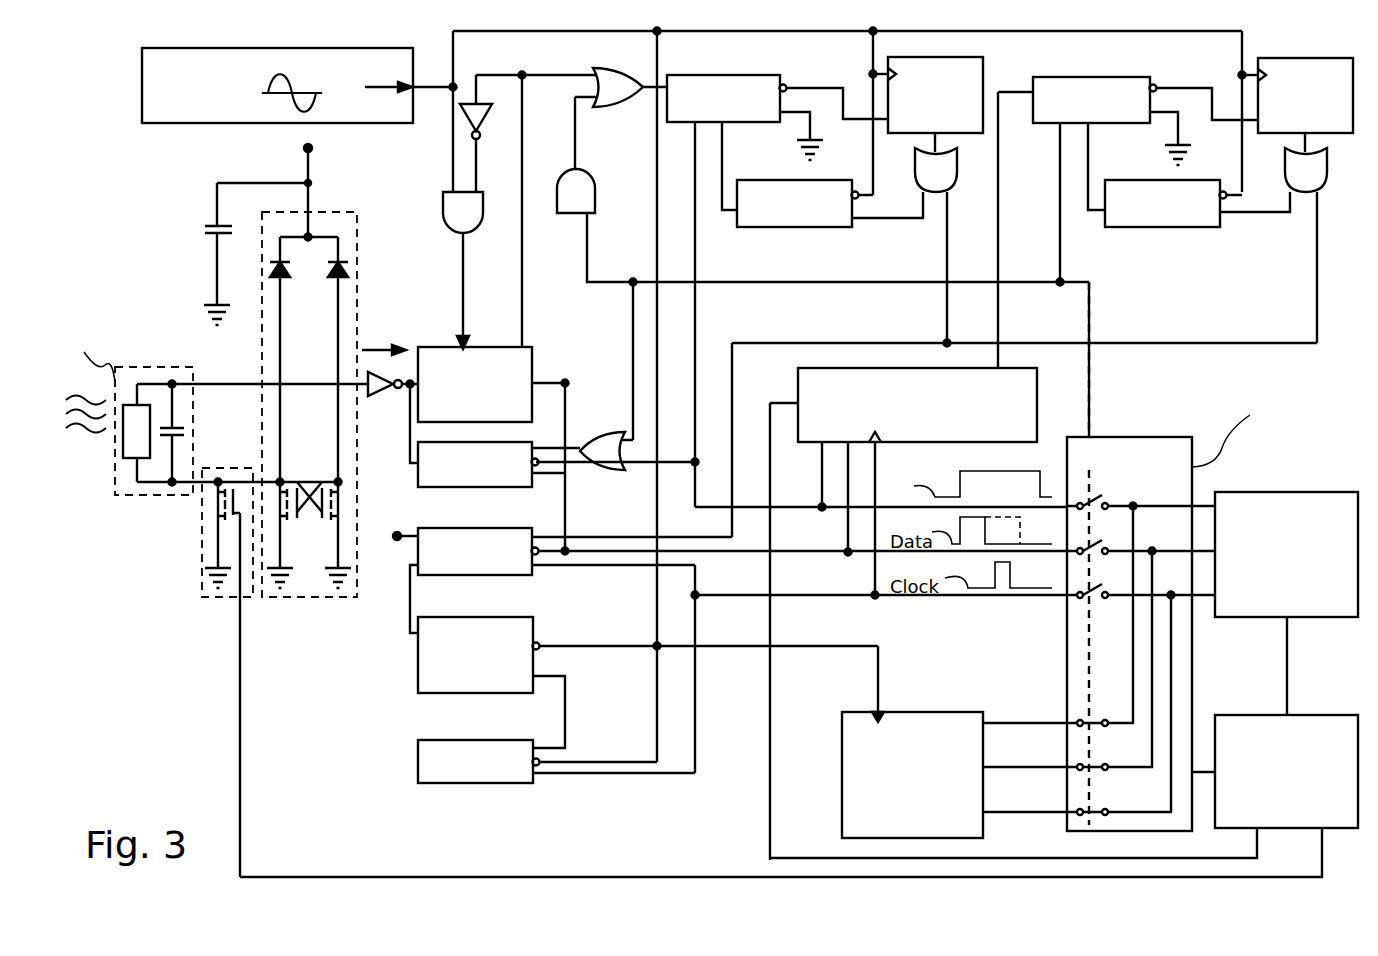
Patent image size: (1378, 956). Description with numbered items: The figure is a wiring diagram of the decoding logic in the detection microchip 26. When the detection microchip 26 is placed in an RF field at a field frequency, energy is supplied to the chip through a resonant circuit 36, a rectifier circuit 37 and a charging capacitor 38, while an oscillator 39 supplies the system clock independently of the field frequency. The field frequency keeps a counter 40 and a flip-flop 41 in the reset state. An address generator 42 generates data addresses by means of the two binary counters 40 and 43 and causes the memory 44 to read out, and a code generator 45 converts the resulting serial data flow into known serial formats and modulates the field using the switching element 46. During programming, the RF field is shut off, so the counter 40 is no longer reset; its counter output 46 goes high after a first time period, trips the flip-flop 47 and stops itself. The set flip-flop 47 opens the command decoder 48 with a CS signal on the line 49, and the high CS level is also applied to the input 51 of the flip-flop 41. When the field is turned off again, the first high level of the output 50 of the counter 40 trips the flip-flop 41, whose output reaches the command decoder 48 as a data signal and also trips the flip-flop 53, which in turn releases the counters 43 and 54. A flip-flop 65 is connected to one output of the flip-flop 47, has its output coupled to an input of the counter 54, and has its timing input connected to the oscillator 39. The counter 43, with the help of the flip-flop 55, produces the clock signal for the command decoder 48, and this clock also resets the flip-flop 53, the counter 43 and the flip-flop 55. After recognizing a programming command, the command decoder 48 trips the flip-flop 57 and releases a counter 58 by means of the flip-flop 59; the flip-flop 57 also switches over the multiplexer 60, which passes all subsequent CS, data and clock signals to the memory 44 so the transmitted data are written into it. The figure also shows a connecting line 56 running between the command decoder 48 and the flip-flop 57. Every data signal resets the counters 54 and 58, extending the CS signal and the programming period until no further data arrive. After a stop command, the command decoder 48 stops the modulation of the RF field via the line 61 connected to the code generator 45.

The detection microchip 26 is at (420, 819).
The resonant circuit 36 is at (182, 368).
The rectifier circuit 37 is at (315, 597).
The charging capacitor 38 is at (205, 228).
The oscillator 39 is at (142, 95).
The counter 40 is at (465, 434).
The flip-flop 41 is at (500, 487).
The address generator 42 is at (954, 768).
The binary counter 43 is at (462, 693).
The memory 44 is at (1286, 603).
The code generator 45 is at (799, 796).
The switching element 46 is at (208, 530).
The flip-flop 47 is at (732, 75).
The command decoder 48 is at (903, 483).
The line 49 is at (783, 506).
The output of counter 50 is at (552, 381).
The input of flip-flop 51 is at (548, 445).
The flip-flop 53 is at (510, 575).
The counter 54 is at (928, 202).
The flip-flop 55 is at (493, 783).
The signal line 56 is at (997, 228).
The flip-flop 57 is at (1090, 77).
The counter 58 is at (1042, 200).
The flip-flop 59 is at (1140, 227).
The multiplexer 60 is at (1206, 556).
The line 61 is at (770, 745).
The flip-flop 65 is at (797, 227).